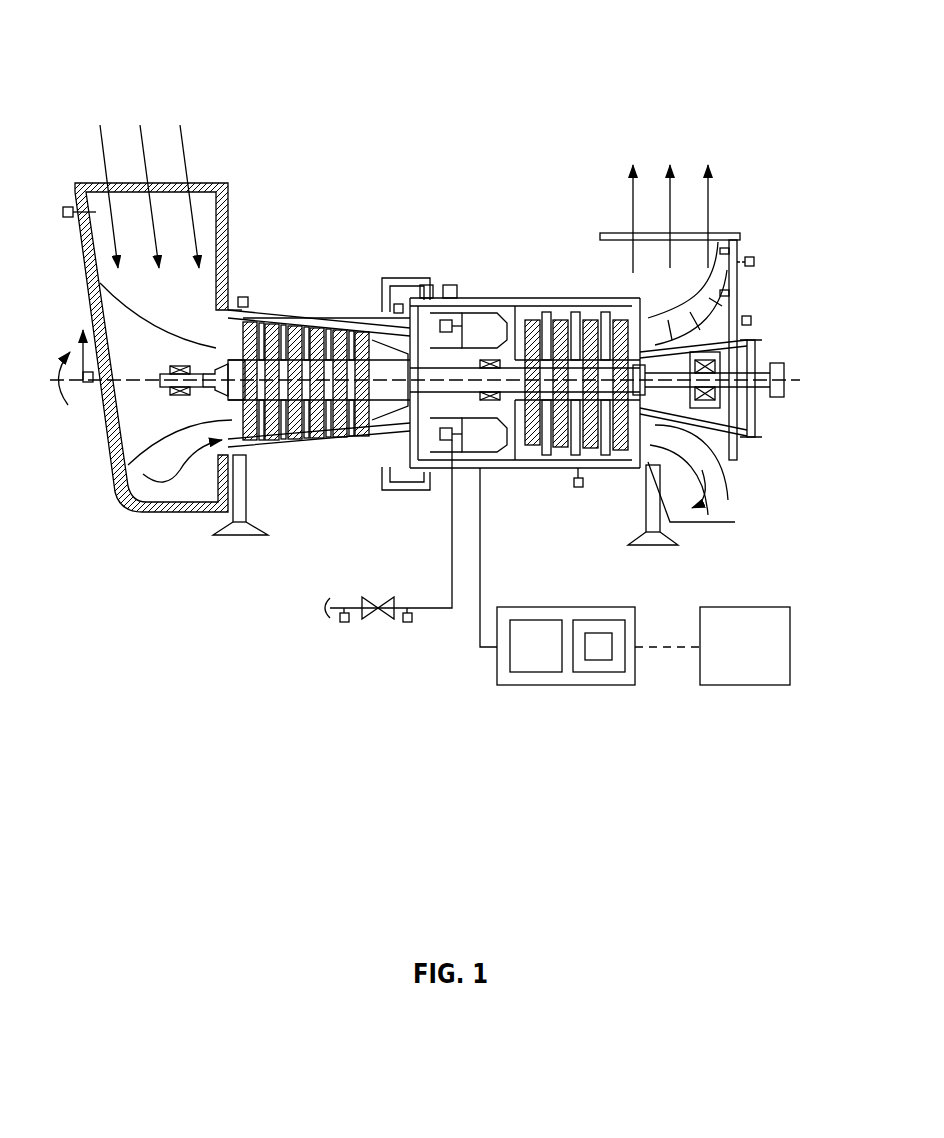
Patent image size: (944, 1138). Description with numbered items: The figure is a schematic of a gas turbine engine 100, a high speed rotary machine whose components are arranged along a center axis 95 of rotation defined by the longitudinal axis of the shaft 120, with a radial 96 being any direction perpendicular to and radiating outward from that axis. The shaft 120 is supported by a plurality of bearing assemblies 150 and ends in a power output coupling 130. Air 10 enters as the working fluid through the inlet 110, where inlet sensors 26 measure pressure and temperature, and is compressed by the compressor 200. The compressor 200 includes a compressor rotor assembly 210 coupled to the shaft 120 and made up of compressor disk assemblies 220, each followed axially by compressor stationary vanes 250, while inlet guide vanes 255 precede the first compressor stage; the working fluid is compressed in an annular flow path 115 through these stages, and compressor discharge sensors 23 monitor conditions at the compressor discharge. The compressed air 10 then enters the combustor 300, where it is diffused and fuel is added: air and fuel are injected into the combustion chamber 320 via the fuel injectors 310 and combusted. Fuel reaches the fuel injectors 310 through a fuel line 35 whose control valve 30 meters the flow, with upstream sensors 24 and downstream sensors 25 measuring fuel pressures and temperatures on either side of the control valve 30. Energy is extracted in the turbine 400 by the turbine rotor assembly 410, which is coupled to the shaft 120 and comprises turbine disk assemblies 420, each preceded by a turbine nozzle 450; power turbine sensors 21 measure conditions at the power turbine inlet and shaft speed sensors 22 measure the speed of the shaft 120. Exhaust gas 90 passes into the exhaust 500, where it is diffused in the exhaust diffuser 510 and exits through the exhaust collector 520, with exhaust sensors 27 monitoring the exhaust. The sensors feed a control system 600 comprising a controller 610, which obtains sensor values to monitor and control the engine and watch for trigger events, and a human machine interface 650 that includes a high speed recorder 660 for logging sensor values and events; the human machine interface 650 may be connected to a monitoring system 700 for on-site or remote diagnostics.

The gas turbine engine 100 is at (205, 40).
The inlet 110 is at (222, 105).
The compressor 200 is at (405, 105).
The combustor 300 is at (505, 105).
The turbine 400 is at (625, 105).
The exhaust 500 is at (760, 128).
The air 10 is at (99, 155).
The inlet sensors 26 is at (65, 210).
The annular flow path 115 is at (211, 318).
The center axis 95 is at (110, 418).
The radial 96 is at (80, 335).
The shaft 120 is at (168, 377).
The bearing assemblies 150 is at (185, 397).
The compressor rotor assembly 210 is at (304, 470).
The compressor disk assemblies 220 is at (290, 450).
The inlet guide vanes 255 is at (244, 297).
The compressor stationary vanes 250 is at (306, 318).
The compressor discharge sensors 23 is at (402, 322).
The fuel injectors 310 is at (448, 284).
The combustion chamber 320 is at (483, 304).
The turbine nozzles 450 is at (610, 312).
The turbine disk assemblies 420 is at (620, 458).
The power turbine sensors 21 is at (572, 484).
The turbine rotor assembly 410 is at (565, 512).
The exhaust gas 90 is at (628, 196).
The exhaust diffuser 510 is at (652, 308).
The exhaust collector 520 is at (720, 267).
The exhaust sensors 27 is at (752, 262).
The shaft speed sensors 22 is at (752, 321).
The power output coupling 130 is at (777, 363).
The fuel line 35 is at (448, 585).
The control valve 30 is at (380, 612).
The upstream sensors 24 is at (345, 623).
The downstream sensors 25 is at (406, 624).
The control system 600 is at (572, 687).
The controller 610 is at (540, 620).
The human machine interface 650 is at (596, 620).
The high speed recorder 660 is at (598, 660).
The monitoring system 700 is at (745, 607).